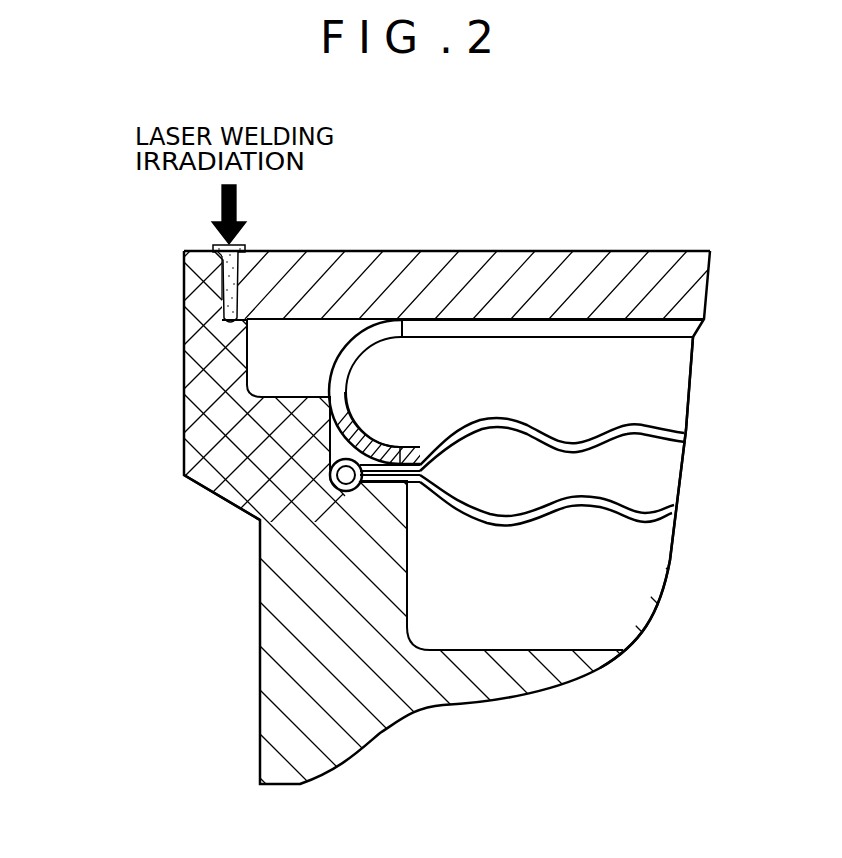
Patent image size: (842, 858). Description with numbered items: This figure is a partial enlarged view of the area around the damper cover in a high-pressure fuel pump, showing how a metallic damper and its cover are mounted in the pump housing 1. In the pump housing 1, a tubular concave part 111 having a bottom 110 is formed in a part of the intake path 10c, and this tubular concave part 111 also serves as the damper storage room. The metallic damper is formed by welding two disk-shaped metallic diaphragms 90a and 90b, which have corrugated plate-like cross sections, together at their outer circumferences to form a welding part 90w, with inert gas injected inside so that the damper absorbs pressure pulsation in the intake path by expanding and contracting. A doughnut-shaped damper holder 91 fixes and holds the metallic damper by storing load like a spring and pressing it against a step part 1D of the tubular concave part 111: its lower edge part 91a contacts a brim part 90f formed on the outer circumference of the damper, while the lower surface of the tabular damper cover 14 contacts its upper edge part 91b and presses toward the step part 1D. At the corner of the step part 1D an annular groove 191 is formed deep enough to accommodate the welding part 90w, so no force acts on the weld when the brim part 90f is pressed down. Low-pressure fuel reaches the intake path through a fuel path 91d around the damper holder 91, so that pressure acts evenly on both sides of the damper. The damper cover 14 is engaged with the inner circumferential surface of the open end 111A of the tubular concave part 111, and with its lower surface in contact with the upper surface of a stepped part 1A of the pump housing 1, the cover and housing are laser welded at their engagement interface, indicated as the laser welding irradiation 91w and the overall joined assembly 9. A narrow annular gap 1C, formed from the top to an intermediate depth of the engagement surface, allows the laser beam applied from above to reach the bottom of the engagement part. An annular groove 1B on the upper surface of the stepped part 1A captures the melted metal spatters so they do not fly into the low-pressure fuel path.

The pump housing 1 is at (200, 458).
The stepped part 1A is at (246, 346).
The annular groove 1B is at (226, 324).
The annular gap 1C is at (222, 268).
The step part 1D is at (397, 497).
The sealed unit 9 is at (627, 244).
The intake path 10c is at (580, 578).
The damper cover 14 is at (317, 265).
The metallic diaphragm 90a is at (622, 425).
The metallic diaphragm 90b is at (630, 527).
The brim part 90f is at (420, 443).
The welding part 90w is at (340, 492).
The damper holder 91 is at (359, 330).
The lower edge part 91a is at (392, 443).
The upper edge part 91b is at (398, 318).
The fuel path 91d is at (330, 490).
The laser weld portion 91w is at (216, 247).
The bottom 110 is at (520, 650).
The tubular concave part 111 is at (410, 596).
The open end 111A is at (262, 400).
The annular groove 191 is at (300, 572).